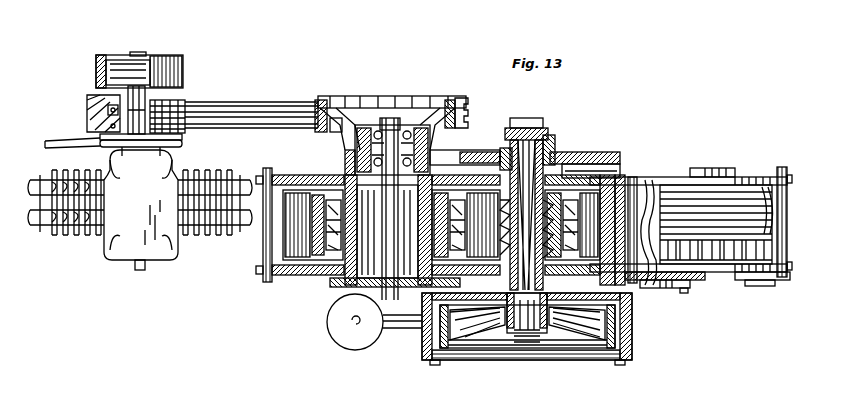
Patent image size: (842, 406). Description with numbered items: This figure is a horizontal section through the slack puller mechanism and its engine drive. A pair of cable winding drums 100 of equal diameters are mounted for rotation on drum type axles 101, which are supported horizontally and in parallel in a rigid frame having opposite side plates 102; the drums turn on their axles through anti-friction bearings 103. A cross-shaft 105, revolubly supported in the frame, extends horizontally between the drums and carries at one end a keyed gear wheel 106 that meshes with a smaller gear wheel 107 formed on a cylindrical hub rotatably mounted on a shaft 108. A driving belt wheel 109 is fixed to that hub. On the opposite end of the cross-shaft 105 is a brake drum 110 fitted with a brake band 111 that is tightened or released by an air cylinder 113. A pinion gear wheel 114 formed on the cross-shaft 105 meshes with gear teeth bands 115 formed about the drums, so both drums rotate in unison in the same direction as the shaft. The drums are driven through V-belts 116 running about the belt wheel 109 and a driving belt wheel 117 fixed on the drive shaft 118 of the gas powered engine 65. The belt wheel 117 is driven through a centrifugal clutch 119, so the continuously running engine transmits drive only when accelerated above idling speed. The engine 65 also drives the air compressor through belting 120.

The gas powered engine 65 is at (120, 256).
The cable winding drum 100 is at (280, 244).
The drum type axle 101 is at (327, 282).
The side plate 102 is at (680, 296).
The anti-friction bearing 103 is at (290, 270).
The cross-shaft 105 is at (545, 135).
The gear wheel 106 is at (608, 152).
The gear wheel 107 is at (345, 145).
The shaft 108 is at (392, 125).
The driving belt wheel 109 is at (462, 98).
The brake drum 110 is at (658, 326).
The brake band 111 is at (660, 346).
The air cylinder 113 is at (357, 340).
The pinion gear wheel 114 is at (540, 330).
The gear teeth band 115 is at (746, 270).
The V-belt 116 is at (272, 104).
The driving belt wheel 117 is at (183, 76).
The drive shaft 118 is at (143, 55).
The centrifugal clutch 119 is at (121, 60).
The belting 120 is at (70, 138).